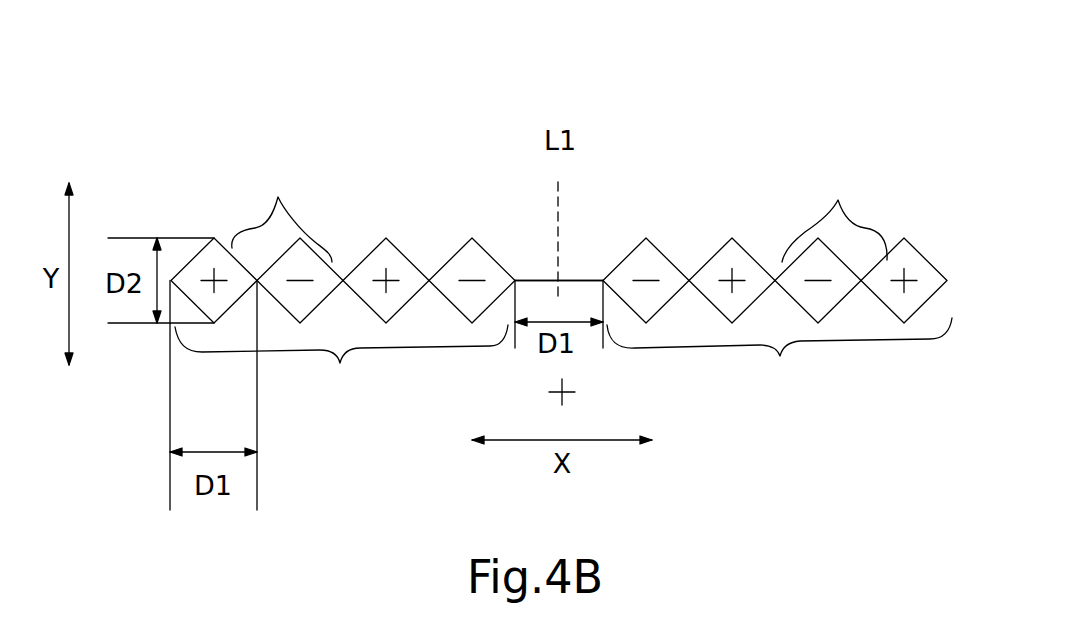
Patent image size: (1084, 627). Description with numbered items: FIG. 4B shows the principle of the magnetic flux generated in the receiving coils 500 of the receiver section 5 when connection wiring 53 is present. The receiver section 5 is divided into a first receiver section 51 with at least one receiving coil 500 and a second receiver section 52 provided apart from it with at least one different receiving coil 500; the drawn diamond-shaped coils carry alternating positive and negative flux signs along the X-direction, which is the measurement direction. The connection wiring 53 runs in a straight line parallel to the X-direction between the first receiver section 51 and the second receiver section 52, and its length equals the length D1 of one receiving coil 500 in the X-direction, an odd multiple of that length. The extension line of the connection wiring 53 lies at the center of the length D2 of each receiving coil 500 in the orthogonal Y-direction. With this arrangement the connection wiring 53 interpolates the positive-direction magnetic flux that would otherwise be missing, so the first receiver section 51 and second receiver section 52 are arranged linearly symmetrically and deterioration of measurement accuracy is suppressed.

The receiver section 5 is at (895, 114).
The receiving coil 500 is at (559, 213).
The first receiver section 51 is at (341, 360).
The second receiver section 52 is at (779, 354).
The connection wiring 53 is at (573, 278).